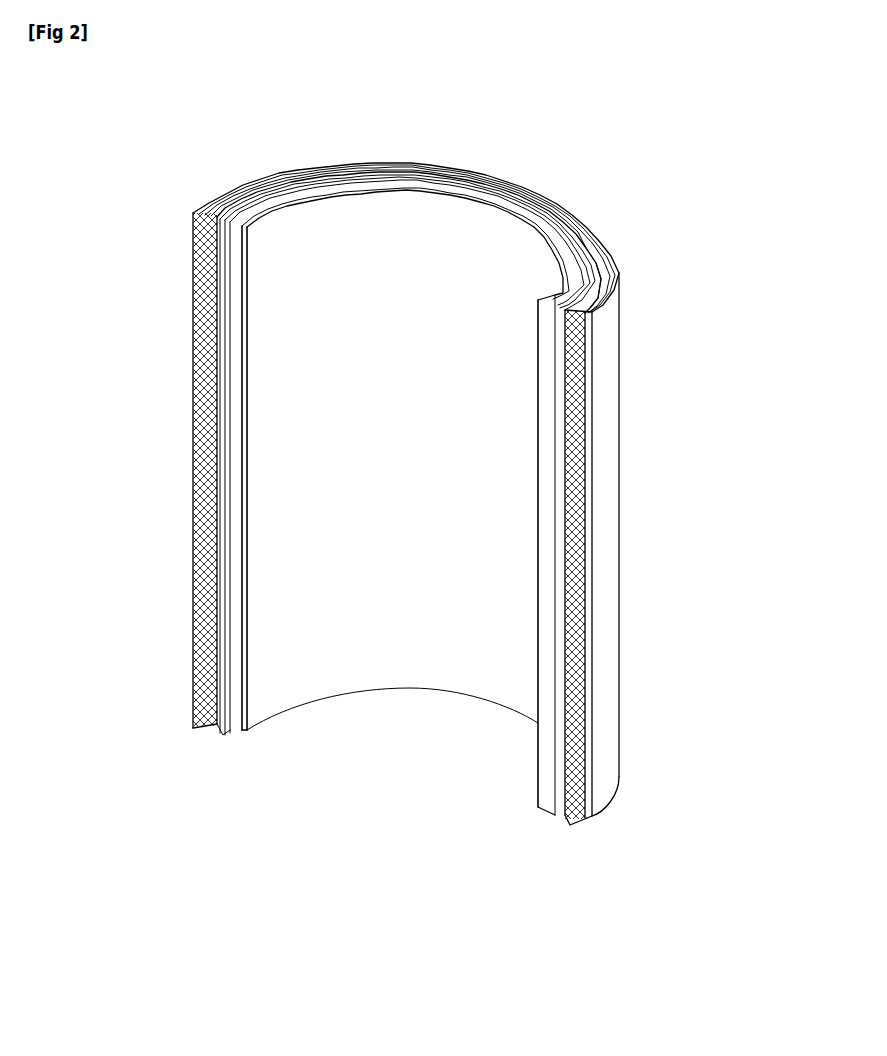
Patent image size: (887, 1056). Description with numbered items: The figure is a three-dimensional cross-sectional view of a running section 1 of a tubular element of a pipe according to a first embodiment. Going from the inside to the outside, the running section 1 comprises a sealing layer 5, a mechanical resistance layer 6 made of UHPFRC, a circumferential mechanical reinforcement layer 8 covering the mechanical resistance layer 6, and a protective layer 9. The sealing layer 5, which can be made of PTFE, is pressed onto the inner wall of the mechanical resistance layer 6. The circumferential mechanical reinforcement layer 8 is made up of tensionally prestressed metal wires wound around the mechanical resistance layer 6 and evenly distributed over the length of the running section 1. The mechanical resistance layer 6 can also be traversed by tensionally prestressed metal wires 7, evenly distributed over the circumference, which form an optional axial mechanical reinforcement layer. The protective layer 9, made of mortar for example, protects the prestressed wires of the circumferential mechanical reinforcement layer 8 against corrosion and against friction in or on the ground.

The running section 1 is at (650, 449).
The sealing layer 5 is at (540, 780).
The mechanical resistance layer 6 is at (233, 373).
The metal wires 7 is at (580, 258).
The circumferential mechanical reinforcement layer 8 is at (197, 465).
The protective layer 9 is at (587, 520).